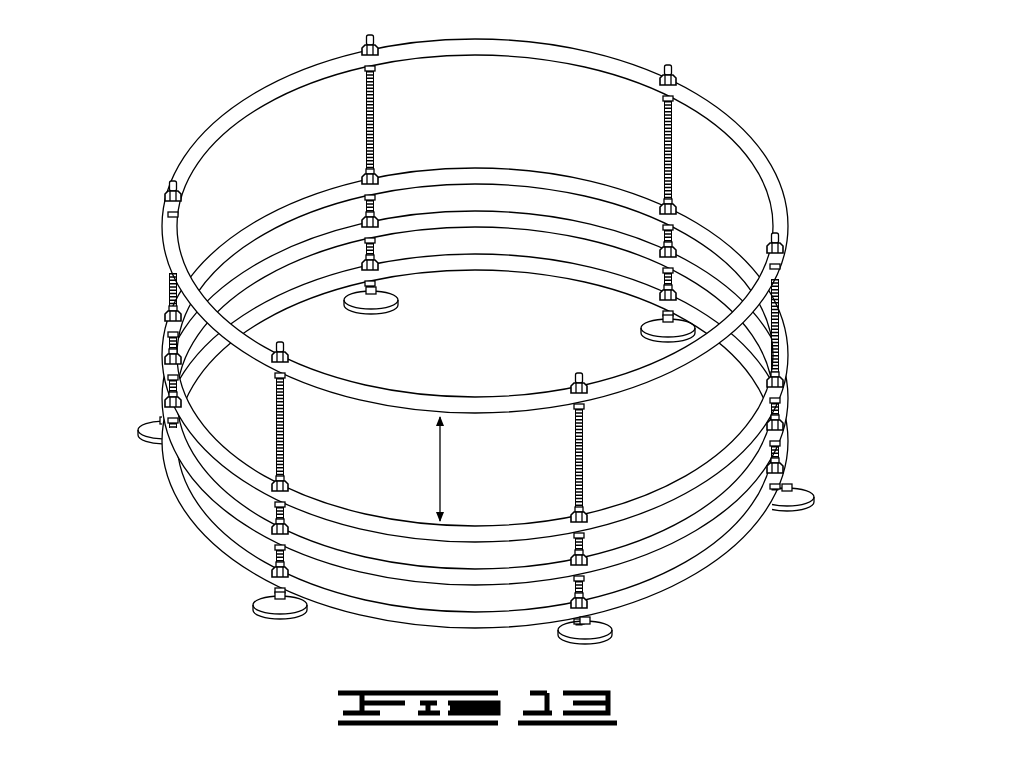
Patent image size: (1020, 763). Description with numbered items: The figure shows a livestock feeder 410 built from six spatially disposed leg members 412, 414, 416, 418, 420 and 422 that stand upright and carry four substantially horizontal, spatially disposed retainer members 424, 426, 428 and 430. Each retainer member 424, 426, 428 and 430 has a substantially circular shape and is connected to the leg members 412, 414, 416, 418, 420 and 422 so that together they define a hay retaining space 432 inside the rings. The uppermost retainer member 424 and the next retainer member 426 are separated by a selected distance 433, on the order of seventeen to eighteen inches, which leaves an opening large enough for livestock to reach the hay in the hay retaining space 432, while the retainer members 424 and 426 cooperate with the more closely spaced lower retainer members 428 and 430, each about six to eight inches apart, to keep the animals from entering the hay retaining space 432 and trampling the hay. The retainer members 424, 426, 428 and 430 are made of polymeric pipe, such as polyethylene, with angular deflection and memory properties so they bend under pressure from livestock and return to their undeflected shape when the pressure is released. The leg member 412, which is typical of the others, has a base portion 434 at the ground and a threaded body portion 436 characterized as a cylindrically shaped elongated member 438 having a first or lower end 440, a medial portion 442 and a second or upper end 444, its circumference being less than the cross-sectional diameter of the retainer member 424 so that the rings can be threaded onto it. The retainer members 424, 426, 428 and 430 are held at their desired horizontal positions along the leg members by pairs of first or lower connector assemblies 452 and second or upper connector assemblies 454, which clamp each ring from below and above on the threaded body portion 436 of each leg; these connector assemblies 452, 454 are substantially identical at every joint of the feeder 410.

The livestock feeder 410 is at (481, 342).
The leg member 412 is at (593, 493).
The leg member 414 is at (787, 318).
The leg member 416 is at (663, 146).
The leg member 418 is at (378, 118).
The leg member 420 is at (168, 292).
The leg member 422 is at (288, 440).
The retainer member 424 is at (565, 46).
The retainer member 426 is at (333, 505).
The retainer member 428 is at (412, 580).
The retainer member 430 is at (405, 624).
The hay retaining space 432 is at (481, 378).
The selected distance 433 is at (442, 464).
The base portion 434 is at (612, 638).
The threaded body portion 436 is at (592, 432).
The cylindrically shaped elongated member 438 is at (586, 479).
The first or lower end 440 is at (560, 632).
The medial portion 442 is at (575, 546).
The second or upper end 444 is at (578, 372).
The first or lower connector assembly 452 is at (570, 411).
The second or upper connector assembly 454 is at (565, 382).